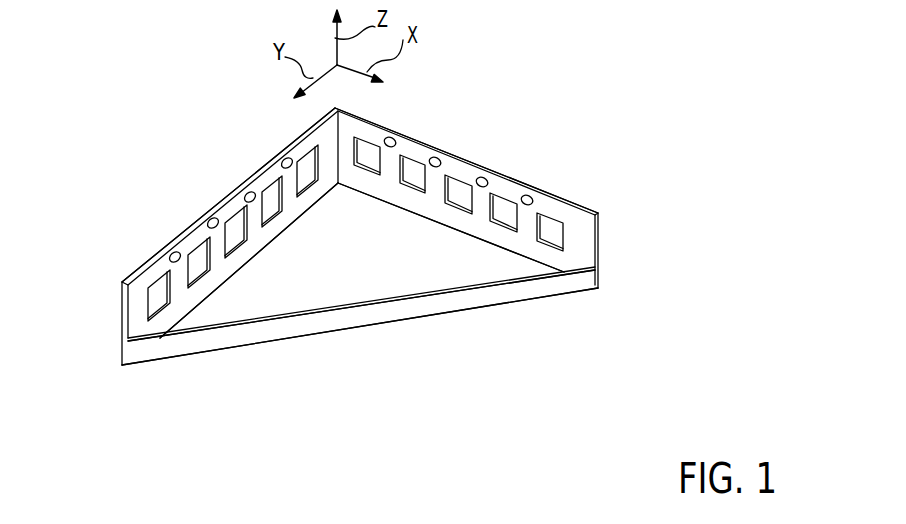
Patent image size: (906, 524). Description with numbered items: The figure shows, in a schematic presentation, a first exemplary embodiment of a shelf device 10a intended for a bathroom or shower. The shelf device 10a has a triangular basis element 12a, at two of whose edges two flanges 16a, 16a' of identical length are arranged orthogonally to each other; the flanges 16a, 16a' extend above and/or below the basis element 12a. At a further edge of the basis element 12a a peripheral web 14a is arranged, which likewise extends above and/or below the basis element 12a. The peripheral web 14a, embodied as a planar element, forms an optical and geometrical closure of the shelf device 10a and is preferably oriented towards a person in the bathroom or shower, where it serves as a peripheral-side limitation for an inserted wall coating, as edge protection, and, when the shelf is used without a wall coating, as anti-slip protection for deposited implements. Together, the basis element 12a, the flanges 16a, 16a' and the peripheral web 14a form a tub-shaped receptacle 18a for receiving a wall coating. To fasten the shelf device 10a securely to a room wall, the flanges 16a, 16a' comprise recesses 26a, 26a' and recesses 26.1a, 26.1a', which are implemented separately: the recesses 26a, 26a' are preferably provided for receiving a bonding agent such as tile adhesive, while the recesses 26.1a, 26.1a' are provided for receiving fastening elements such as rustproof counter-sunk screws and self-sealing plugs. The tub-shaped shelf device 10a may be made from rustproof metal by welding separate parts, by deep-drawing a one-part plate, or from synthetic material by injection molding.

The shelf device 10a is at (349, 230).
The basis element 12a is at (295, 292).
The peripheral web 14a is at (445, 302).
The tub-shaped receptacle 18a is at (470, 270).
The flange 16a is at (228, 223).
The flange 16a' is at (466, 180).
The recess 26a is at (118, 266).
The recess 26a' is at (584, 186).
The recess 26.1a is at (231, 192).
The recess 26.1a' is at (459, 129).